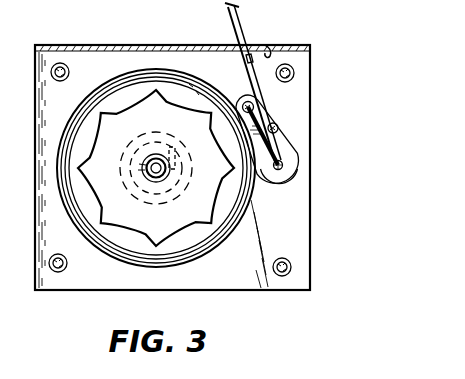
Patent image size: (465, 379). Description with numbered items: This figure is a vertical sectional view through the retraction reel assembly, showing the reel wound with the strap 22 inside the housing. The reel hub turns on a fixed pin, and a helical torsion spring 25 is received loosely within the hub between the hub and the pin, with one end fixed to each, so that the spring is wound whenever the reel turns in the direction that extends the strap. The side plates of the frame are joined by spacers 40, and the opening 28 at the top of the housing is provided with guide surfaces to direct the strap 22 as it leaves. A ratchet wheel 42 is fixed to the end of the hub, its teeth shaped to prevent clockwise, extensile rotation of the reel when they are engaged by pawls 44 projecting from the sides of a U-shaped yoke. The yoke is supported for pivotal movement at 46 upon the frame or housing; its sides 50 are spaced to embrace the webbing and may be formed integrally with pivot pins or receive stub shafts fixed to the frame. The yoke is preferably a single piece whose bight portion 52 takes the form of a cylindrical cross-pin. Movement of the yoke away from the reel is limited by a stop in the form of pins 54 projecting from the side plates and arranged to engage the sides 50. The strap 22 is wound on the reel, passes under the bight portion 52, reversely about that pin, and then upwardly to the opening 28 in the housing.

The strap 22 is at (246, 21).
The helical torsion spring 25 is at (172, 185).
The opening 28 is at (267, 45).
The spacers 40 is at (66, 64).
The ratchet wheel 42 is at (172, 228).
The pawls 44 is at (283, 166).
The yoke pivot 46 is at (254, 99).
The sides of the yoke 50 is at (289, 143).
The bight portion 52 is at (282, 190).
The pins 54 is at (277, 125).